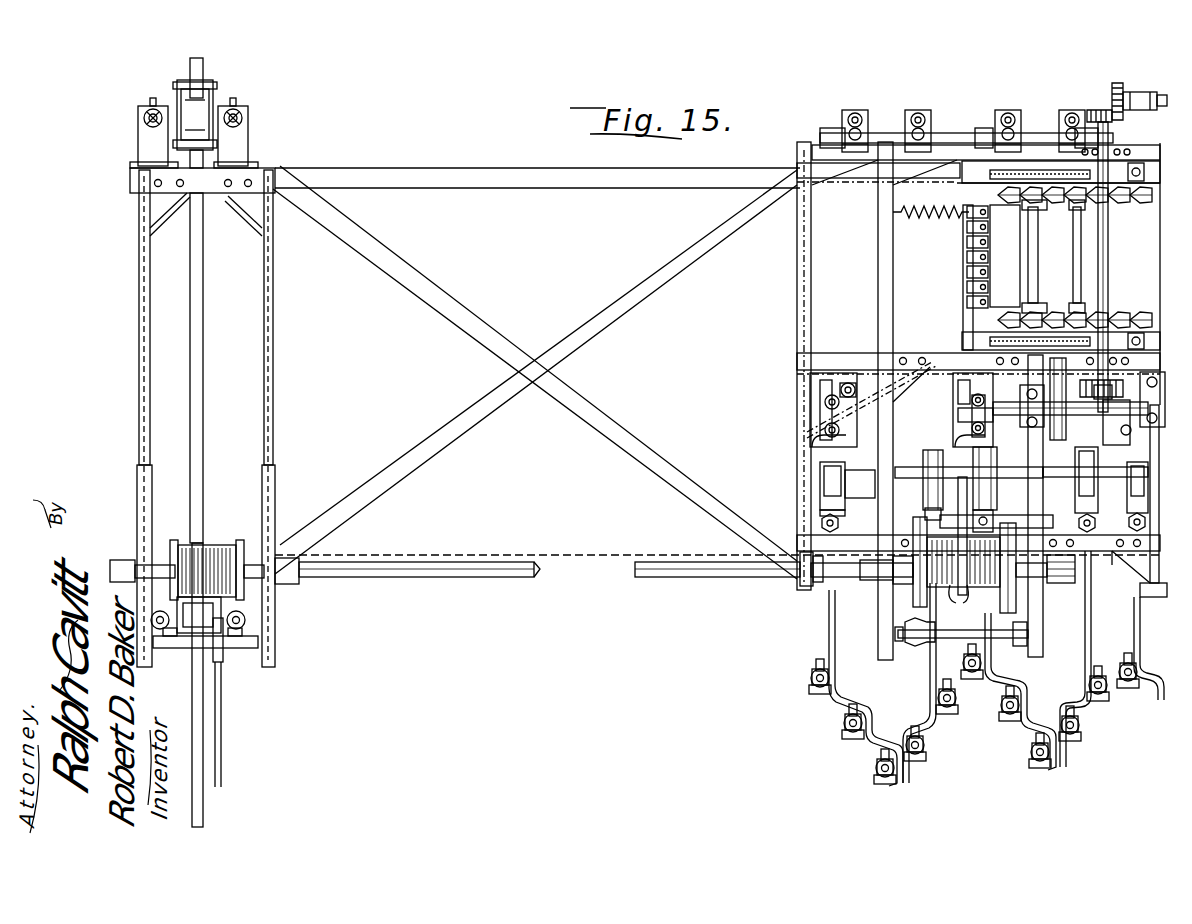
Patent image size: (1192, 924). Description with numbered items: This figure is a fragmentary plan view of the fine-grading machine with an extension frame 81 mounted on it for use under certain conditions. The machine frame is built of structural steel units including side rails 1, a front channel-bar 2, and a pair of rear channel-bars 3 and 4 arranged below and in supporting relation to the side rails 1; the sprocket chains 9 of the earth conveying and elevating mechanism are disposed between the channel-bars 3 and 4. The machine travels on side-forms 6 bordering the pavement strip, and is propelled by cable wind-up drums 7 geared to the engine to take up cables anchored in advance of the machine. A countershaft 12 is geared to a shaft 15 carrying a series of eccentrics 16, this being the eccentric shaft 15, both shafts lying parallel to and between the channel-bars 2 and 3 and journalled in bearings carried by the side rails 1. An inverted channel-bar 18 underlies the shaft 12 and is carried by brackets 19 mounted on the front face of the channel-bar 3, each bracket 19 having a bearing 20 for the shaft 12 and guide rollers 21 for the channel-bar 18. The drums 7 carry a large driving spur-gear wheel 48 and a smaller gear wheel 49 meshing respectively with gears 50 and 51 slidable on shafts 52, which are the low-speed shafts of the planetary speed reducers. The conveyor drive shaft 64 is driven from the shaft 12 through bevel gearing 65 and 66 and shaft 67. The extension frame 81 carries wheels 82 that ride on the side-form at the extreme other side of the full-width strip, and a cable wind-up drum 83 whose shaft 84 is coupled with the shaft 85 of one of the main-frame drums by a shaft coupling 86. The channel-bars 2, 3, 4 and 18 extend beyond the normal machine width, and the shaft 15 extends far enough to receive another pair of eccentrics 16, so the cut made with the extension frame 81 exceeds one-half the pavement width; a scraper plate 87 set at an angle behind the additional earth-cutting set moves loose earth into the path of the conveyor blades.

The side rails 1 is at (879, 300).
The front channel-bar 2 is at (1108, 553).
The rear channel-bar 3 is at (847, 357).
The rear channel-bar 4 is at (945, 148).
The side-forms 6 is at (193, 706).
The cable wind-up drums 7 is at (962, 600).
The sprocket chains 9 is at (1113, 200).
The countershaft 12 is at (1006, 420).
The eccentric shaft 15 is at (1063, 470).
The eccentrics 16 is at (1080, 488).
The inverted channel-bar 18 is at (872, 484).
The brackets 19 is at (818, 386).
The bearing 20 is at (848, 425).
The guide rollers 21 is at (956, 414).
The driving spur-gear wheel 48 is at (1009, 618).
The gear wheel 49 is at (911, 570).
The gear 50 is at (996, 511).
The gear 51 is at (926, 496).
The shafts 52 is at (1003, 480).
The shaft 64 is at (1162, 94).
The bevel gearing 65 is at (1062, 392).
The bevel gearing 66 is at (1098, 105).
The shaft 67 is at (1109, 272).
The extension frame 81 is at (565, 180).
The wheels 82 is at (204, 90).
The cable wind-up drum 83 is at (185, 556).
The shaft 84 is at (636, 580).
The shaft 85 is at (896, 582).
The shaft coupling 86 is at (806, 582).
The scraper plate 87 is at (938, 352).